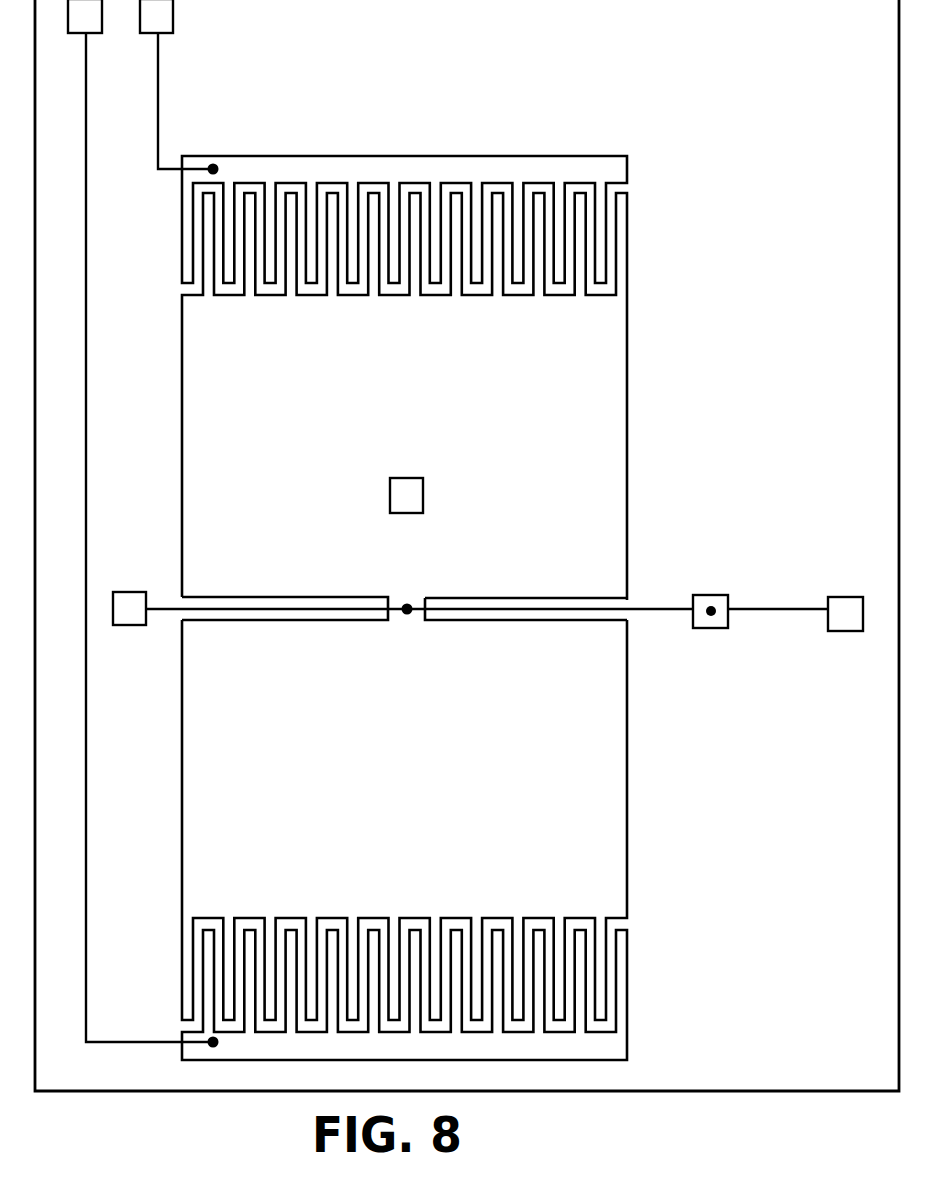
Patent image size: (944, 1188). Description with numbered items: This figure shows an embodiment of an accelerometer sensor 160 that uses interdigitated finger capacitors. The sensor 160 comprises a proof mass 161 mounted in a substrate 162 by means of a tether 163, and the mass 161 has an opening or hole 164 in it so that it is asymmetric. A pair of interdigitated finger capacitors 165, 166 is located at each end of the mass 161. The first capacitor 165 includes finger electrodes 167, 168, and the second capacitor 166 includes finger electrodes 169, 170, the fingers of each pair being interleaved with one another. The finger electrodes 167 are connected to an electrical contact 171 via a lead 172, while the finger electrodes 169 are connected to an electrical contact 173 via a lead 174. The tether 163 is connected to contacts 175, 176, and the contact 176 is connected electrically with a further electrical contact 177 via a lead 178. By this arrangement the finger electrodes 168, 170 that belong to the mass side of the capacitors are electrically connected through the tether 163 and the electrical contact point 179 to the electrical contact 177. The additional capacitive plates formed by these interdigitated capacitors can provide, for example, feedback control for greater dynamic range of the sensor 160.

The sensor 160 is at (778, 112).
The proof mass 161 is at (682, 709).
The substrate 162 is at (813, 410).
The tether 163 is at (643, 608).
The opening or hole 164 is at (423, 490).
The interdigitated finger capacitor 165 is at (700, 208).
The interdigitated finger capacitor 166 is at (734, 975).
The finger electrodes 167 is at (186, 243).
The finger electrodes 168 is at (627, 268).
The finger electrodes 169 is at (185, 962).
The finger electrodes 170 is at (623, 964).
The electrical contact 171 is at (174, 22).
The lead 172 is at (158, 90).
The electrical contact 173 is at (93, 34).
The lead 174 is at (88, 766).
The contact 175 is at (130, 591).
The contact 176 is at (715, 629).
The electrical contact 177 is at (840, 632).
The lead 178 is at (772, 608).
The electrical contact point 179 is at (408, 614).